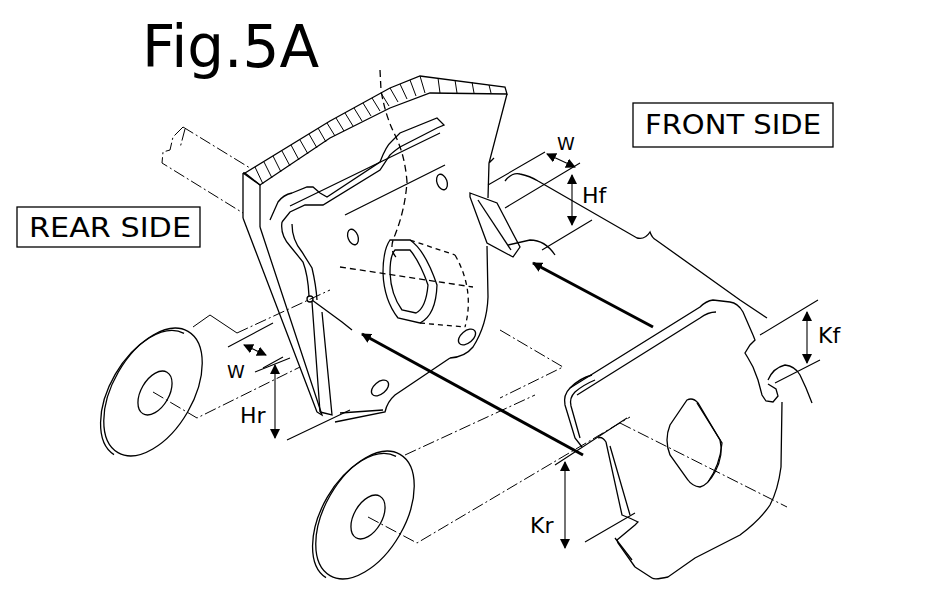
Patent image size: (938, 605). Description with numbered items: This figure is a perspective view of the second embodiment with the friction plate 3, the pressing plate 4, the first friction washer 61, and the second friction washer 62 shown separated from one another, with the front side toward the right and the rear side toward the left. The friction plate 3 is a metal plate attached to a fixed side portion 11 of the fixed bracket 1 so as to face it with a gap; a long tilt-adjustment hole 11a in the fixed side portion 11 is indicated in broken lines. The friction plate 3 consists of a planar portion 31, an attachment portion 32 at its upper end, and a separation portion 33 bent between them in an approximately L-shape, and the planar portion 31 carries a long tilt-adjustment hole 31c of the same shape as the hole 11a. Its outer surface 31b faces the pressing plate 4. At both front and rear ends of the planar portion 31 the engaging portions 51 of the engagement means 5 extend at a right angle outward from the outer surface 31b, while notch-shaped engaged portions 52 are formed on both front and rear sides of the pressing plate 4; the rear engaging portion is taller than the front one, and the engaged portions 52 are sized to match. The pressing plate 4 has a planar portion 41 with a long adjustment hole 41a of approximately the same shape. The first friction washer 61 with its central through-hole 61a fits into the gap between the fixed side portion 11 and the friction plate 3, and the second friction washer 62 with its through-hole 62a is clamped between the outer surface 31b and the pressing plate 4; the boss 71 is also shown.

The fixed bracket 1 is at (494, 82).
The friction plate 3 is at (300, 266).
The pressing plate 4 is at (722, 320).
The engagement means 5 is at (636, 246).
The fixed side portion 11 is at (503, 110).
The long tilt-adjustment hole 11a is at (399, 153).
The planar portion 31 is at (490, 158).
The outer surface 31b is at (400, 398).
The long tilt-adjustment hole 31c is at (460, 360).
The attachment portion 32 is at (448, 125).
The separation portion 33 is at (450, 160).
The planar portion 41 is at (760, 533).
The long adjustment hole 41a is at (693, 433).
The engaging portion 51 is at (560, 250).
The engaged portion 52 is at (338, 440).
The first friction washer 61 is at (160, 432).
The through-hole 61a is at (165, 402).
The second friction washer 62 is at (373, 567).
The through-hole 62a is at (378, 502).
The cylindrical boss 71 is at (455, 280).